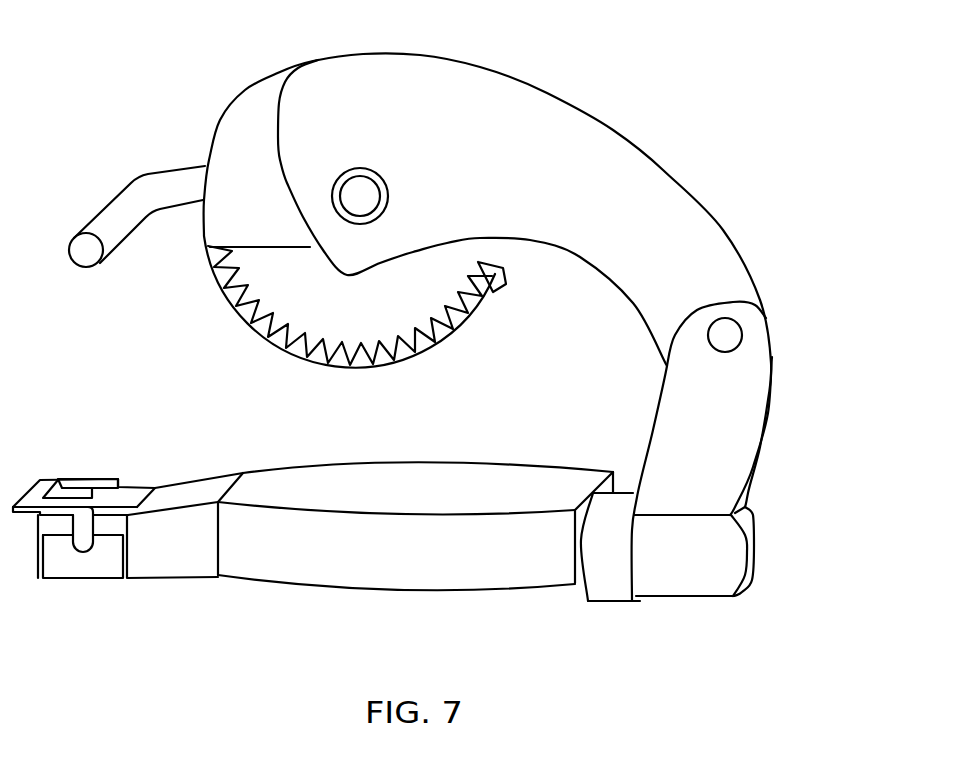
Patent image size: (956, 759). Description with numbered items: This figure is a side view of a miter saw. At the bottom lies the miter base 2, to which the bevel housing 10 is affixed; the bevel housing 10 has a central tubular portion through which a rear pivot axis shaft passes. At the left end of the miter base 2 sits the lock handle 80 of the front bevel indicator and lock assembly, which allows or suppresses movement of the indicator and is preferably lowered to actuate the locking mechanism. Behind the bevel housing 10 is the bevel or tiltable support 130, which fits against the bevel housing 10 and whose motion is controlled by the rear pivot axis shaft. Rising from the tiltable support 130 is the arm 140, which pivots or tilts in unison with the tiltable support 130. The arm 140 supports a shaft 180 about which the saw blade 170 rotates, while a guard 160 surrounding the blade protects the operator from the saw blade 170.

The miter base 2 is at (408, 565).
The bevel housing 10 is at (603, 588).
The lock handle 80 is at (33, 487).
The bevel or tiltable support 130 is at (713, 557).
The arm 140 is at (740, 402).
The guard 160 is at (248, 120).
The saw blade 170 is at (262, 323).
The shaft 180 is at (360, 193).